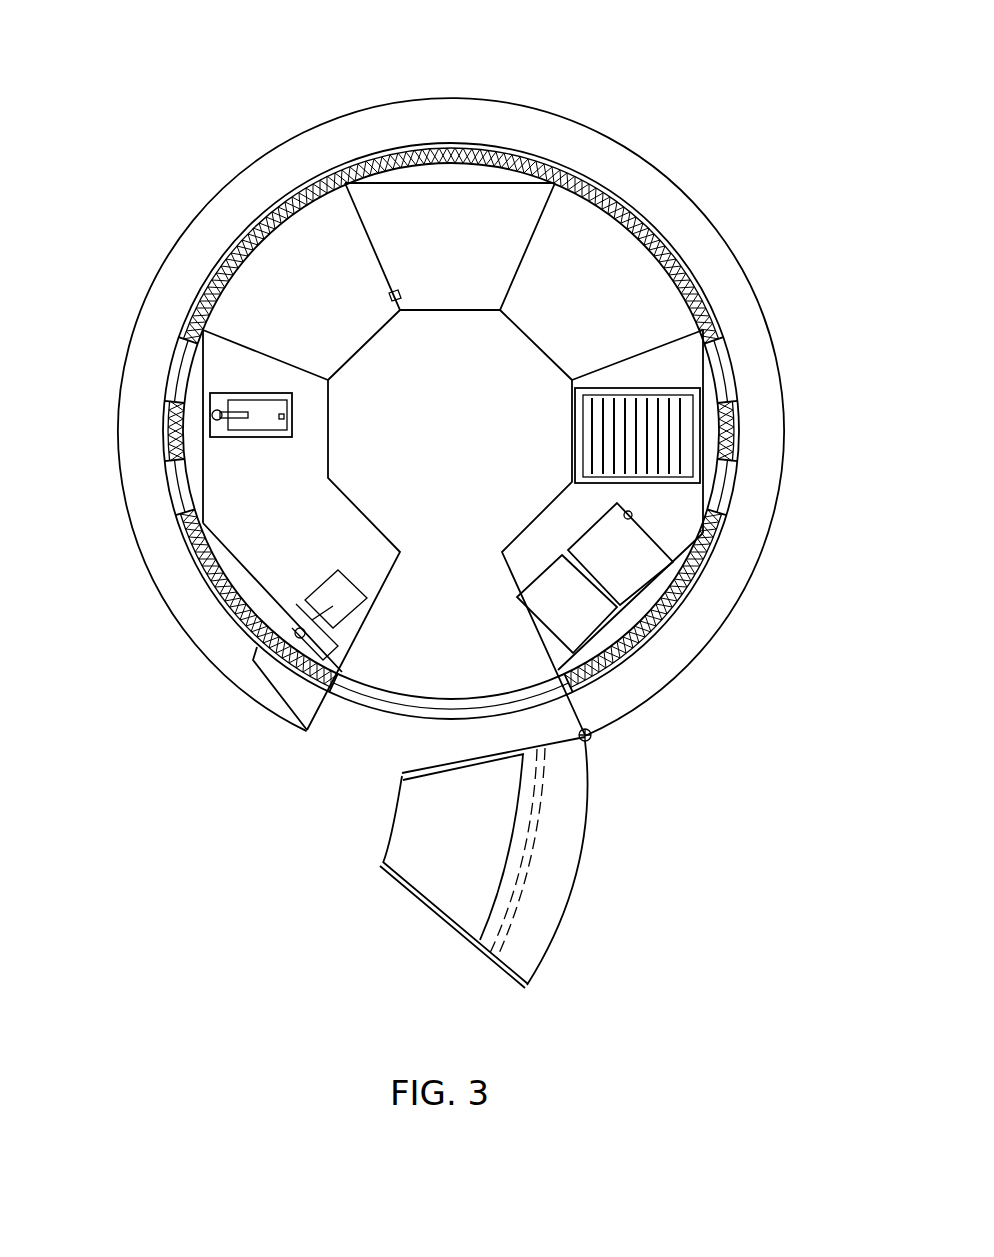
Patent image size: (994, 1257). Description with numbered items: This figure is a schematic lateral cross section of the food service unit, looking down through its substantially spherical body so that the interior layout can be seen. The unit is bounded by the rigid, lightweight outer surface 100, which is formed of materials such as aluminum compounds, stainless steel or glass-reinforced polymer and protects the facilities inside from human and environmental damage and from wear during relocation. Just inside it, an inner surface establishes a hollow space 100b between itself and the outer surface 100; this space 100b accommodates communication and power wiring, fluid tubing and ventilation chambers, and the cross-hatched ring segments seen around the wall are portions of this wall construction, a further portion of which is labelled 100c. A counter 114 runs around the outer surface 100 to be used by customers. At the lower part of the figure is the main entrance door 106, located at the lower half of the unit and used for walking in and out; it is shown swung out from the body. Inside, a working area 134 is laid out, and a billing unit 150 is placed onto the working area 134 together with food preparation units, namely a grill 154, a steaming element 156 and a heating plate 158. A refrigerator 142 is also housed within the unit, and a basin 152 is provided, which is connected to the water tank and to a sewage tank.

The outer surface 100 is at (648, 218).
The hollow space 100b is at (693, 273).
The wall panel 100c is at (737, 375).
The main entrance door 106 is at (447, 883).
The counter 114 is at (215, 227).
The working area 134 is at (227, 538).
The refrigerator 142 is at (567, 270).
The billing unit 150 is at (257, 667).
The basin 152 is at (220, 402).
The grill 154 is at (707, 438).
The steaming element 156 is at (625, 555).
The heating plate 158 is at (583, 618).